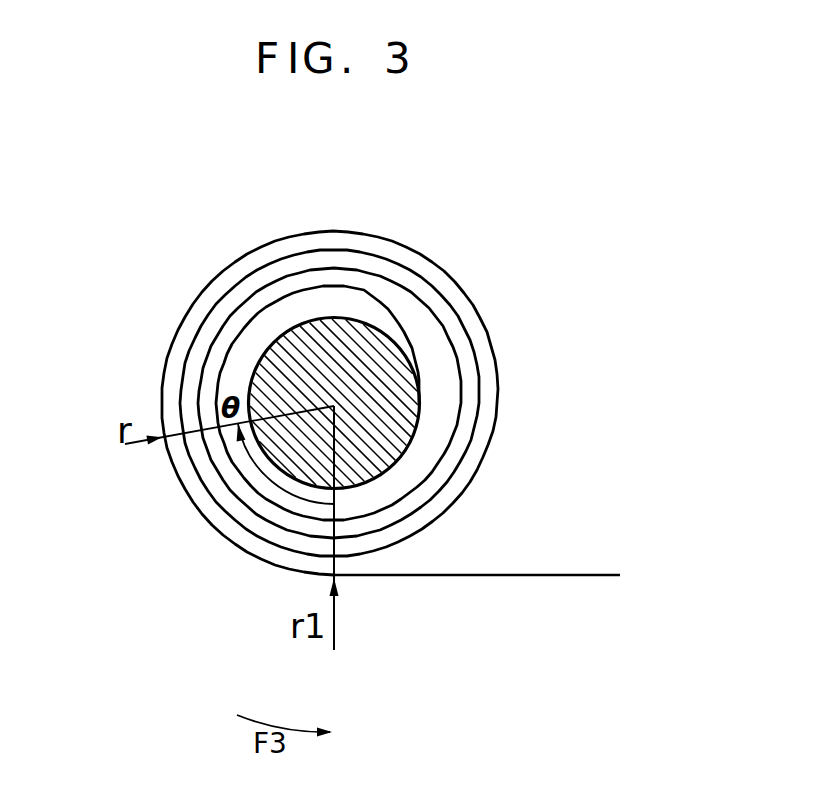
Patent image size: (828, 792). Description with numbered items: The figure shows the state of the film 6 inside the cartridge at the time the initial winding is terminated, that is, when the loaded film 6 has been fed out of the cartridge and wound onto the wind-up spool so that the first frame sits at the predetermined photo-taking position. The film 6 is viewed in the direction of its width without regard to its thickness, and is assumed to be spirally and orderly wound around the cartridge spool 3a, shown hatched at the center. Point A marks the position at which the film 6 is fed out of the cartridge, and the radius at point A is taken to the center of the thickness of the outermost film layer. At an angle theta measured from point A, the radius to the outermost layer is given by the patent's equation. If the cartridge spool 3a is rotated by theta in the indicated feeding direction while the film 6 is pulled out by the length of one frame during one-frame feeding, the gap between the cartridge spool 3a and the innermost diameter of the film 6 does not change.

The cartridge spool 3a is at (413, 414).
The film 6 is at (515, 574).
The point at which the film is fed A is at (338, 577).